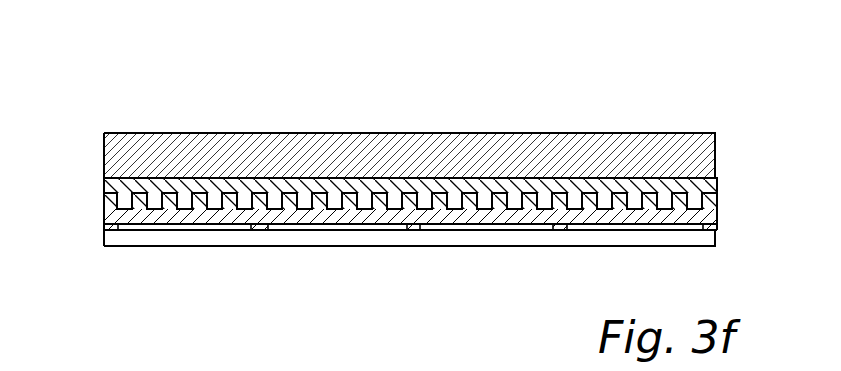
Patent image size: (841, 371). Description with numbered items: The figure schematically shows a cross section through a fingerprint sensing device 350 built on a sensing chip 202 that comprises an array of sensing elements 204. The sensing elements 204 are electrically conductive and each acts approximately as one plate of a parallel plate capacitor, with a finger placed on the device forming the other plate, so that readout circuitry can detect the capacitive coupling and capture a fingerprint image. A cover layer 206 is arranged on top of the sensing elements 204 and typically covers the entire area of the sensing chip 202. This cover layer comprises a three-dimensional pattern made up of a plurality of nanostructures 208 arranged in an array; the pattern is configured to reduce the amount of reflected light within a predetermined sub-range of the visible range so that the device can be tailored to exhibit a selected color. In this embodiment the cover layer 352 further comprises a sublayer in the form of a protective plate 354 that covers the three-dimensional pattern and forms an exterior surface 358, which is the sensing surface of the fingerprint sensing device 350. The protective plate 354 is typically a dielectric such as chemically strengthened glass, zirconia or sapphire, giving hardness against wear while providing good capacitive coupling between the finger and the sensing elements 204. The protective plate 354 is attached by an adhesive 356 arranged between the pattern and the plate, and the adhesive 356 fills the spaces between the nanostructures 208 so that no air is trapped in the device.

The fingerprint sensing device 350 is at (118, 106).
The cover layer 352 is at (95, 135).
The exterior surface 358 is at (649, 132).
The protective plate 354 is at (565, 148).
The nanostructures 208 is at (337, 189).
The adhesive 356 is at (472, 186).
The sensing elements 204 is at (359, 222).
The cover layer 206 is at (229, 205).
The sensing chip 202 is at (453, 238).